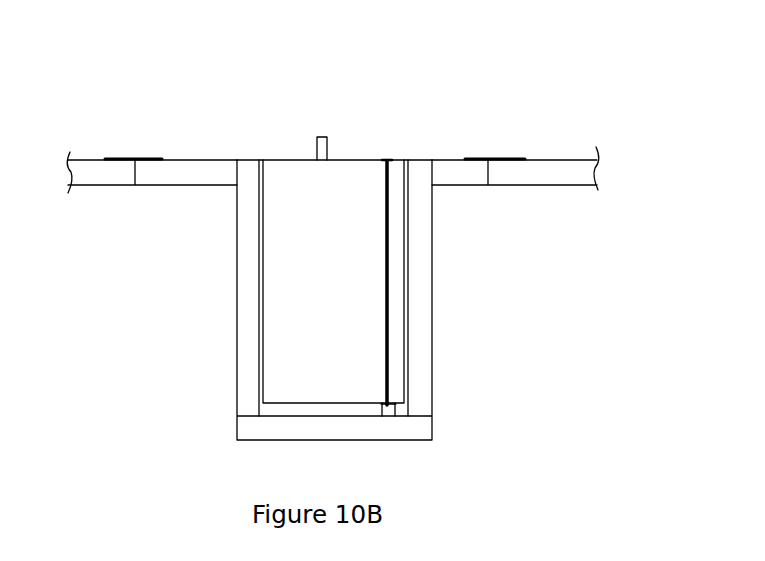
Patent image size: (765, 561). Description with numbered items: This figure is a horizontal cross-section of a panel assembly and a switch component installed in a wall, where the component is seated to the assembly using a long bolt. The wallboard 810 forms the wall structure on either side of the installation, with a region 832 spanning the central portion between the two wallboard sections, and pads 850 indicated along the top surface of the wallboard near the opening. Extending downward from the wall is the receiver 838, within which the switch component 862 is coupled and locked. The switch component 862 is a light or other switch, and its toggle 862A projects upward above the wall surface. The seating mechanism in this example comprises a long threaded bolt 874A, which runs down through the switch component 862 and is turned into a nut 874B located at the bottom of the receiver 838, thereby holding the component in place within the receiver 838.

The wallboard 810 is at (133, 115).
The cavity region 832 is at (488, 112).
The contact pads 850 is at (155, 158).
The receiver 838 is at (433, 278).
The switch component 862 is at (265, 238).
The toggle 862A is at (317, 150).
The long threaded bolt 874A is at (387, 327).
The nut 874B is at (380, 407).